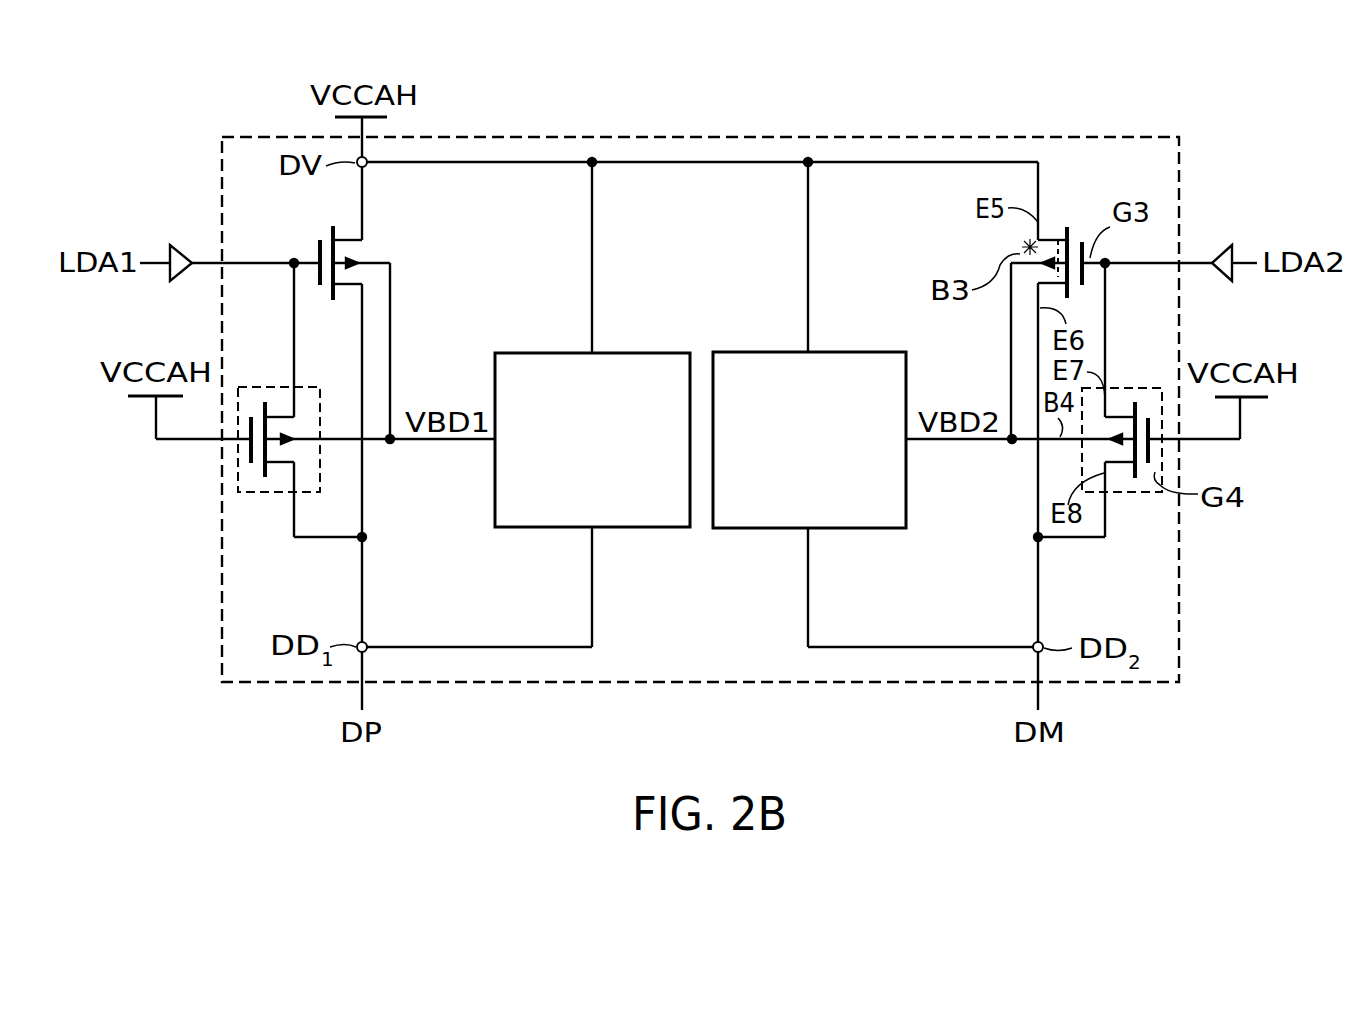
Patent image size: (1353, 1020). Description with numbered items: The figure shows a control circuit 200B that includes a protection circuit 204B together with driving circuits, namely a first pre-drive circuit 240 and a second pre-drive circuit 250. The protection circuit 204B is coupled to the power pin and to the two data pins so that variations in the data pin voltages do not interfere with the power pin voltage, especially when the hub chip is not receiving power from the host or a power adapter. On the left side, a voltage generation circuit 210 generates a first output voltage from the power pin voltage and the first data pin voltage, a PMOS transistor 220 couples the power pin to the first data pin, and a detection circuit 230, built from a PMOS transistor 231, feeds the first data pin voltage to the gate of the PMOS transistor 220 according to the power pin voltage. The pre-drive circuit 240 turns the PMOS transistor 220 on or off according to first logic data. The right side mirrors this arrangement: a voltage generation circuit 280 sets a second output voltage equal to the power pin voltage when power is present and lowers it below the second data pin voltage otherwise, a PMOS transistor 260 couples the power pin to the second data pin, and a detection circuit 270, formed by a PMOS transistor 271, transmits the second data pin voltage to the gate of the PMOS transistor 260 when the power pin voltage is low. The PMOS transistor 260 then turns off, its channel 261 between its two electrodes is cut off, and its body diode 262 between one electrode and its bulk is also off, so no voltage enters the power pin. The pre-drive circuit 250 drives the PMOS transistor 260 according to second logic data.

The control circuit 200B is at (1327, 68).
The protection circuit 204B is at (702, 137).
The pre-drive circuit 240 is at (183, 245).
The pre-drive circuit 250 is at (1222, 245).
The PMOS transistor 220 is at (327, 236).
The detection circuit 230 is at (268, 387).
The PMOS transistor 231 is at (282, 464).
The voltage generation circuit 210 is at (495, 352).
The voltage generation circuit 280 is at (714, 352).
The PMOS transistor 260 is at (1075, 237).
The channel 261 is at (1066, 226).
The body diode 262 is at (1026, 246).
The detection circuit 270 is at (1133, 388).
The PMOS transistor 271 is at (1120, 464).